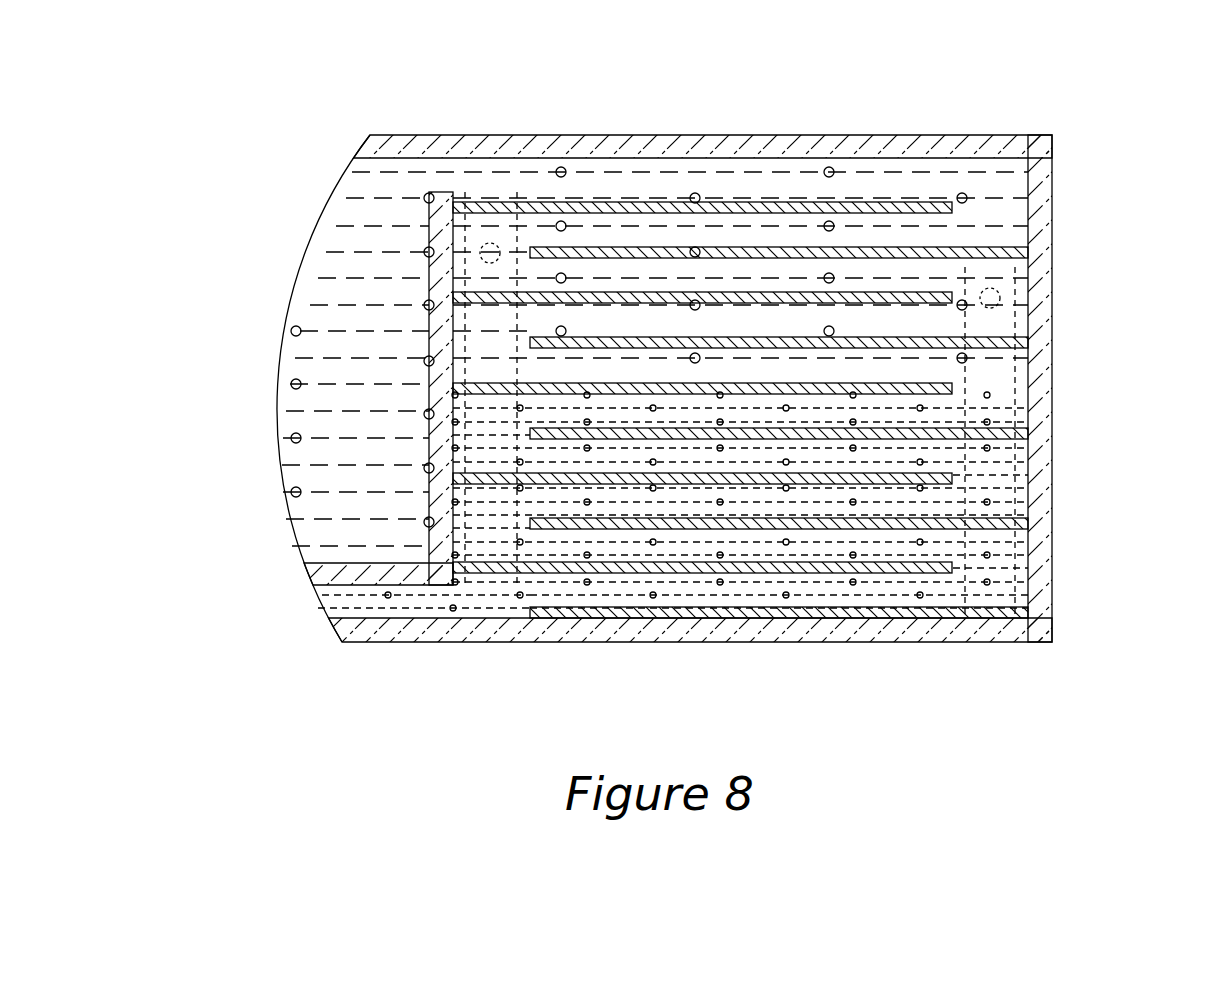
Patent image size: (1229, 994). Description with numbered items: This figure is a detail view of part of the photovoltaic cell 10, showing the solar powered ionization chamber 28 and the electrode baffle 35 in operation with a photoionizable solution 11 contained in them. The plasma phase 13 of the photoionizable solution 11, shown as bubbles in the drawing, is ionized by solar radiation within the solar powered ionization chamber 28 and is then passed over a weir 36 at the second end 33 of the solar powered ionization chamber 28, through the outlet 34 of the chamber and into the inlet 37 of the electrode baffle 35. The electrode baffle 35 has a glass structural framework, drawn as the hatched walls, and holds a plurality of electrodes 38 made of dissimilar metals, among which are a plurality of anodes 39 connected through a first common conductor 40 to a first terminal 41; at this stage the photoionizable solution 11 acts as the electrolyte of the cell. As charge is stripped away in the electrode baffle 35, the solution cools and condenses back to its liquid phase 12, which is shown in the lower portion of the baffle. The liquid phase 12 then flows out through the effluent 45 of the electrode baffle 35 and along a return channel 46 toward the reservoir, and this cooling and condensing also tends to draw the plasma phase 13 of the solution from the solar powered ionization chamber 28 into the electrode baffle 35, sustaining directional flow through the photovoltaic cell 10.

The photovoltaic cell 10 is at (1143, 163).
The photoionizable solution 11 is at (327, 290).
The liquid phase 12 is at (998, 490).
The plasma phase 13 is at (868, 178).
The solar powered ionization chamber 28 is at (322, 515).
The second end of the ionization chamber 33 is at (372, 190).
The outlet from the ionization chamber 34 is at (395, 180).
The electrode baffle 35 is at (1103, 295).
The weir 36 is at (440, 325).
The inlet of the electrode baffle 37 is at (480, 186).
The electrodes 38 is at (712, 203).
The anodes 39 is at (627, 208).
The first common conductor 40 is at (478, 370).
The first terminal 41 is at (490, 253).
The effluent 45 is at (440, 600).
The return channel 46 is at (345, 602).